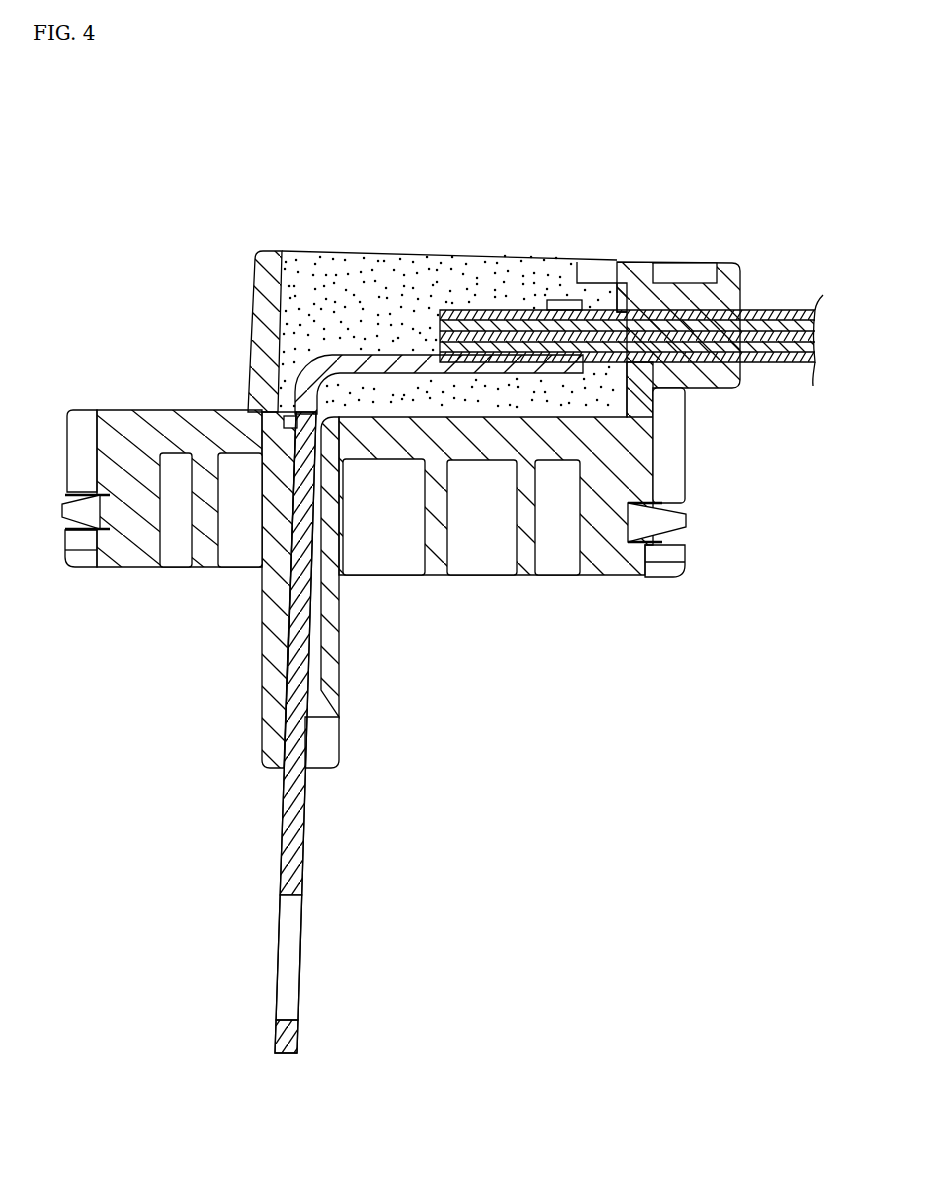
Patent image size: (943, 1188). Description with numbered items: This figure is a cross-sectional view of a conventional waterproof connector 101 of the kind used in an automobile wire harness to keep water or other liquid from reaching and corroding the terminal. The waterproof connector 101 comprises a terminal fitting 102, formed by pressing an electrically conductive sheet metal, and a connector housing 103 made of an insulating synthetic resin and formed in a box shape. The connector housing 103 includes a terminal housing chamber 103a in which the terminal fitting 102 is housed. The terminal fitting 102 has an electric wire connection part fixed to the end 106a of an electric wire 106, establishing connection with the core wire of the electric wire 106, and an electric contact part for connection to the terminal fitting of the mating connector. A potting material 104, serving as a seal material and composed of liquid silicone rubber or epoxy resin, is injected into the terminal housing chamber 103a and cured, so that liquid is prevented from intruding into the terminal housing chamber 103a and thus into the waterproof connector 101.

The waterproof connector 101 is at (535, 207).
The terminal fitting 102 is at (303, 792).
The connector housing 103 is at (611, 568).
The terminal housing chamber 103a is at (567, 398).
The potting material 104 is at (395, 275).
The electric wire 106 is at (768, 305).
The end of electric wire 106a is at (612, 305).